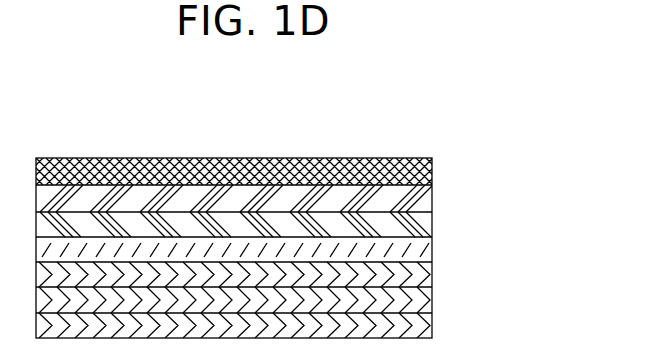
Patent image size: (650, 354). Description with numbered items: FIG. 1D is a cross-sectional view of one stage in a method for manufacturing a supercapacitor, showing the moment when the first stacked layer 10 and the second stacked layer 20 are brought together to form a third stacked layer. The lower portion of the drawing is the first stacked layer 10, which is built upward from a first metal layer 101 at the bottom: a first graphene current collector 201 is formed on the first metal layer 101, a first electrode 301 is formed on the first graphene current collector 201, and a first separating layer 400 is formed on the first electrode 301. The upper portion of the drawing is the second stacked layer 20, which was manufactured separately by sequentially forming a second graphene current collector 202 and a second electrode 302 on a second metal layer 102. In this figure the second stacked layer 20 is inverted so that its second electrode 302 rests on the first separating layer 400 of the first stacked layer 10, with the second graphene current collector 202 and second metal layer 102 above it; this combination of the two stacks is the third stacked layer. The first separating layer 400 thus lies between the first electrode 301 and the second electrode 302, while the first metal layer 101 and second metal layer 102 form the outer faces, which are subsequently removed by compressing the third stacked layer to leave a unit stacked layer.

The first stacked layer 10 is at (294, 288).
The second stacked layer 20 is at (279, 197).
The first metal layer 101 is at (273, 325).
The first graphene current collector 201 is at (432, 297).
The first electrode 301 is at (432, 272).
The first separating layer 400 is at (432, 245).
The second electrode 302 is at (432, 217).
The second graphene current collector 202 is at (432, 193).
The second metal layer 102 is at (432, 165).